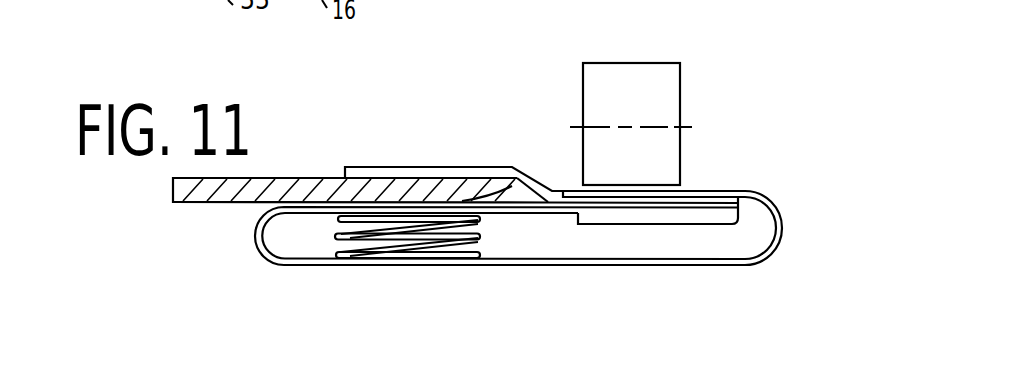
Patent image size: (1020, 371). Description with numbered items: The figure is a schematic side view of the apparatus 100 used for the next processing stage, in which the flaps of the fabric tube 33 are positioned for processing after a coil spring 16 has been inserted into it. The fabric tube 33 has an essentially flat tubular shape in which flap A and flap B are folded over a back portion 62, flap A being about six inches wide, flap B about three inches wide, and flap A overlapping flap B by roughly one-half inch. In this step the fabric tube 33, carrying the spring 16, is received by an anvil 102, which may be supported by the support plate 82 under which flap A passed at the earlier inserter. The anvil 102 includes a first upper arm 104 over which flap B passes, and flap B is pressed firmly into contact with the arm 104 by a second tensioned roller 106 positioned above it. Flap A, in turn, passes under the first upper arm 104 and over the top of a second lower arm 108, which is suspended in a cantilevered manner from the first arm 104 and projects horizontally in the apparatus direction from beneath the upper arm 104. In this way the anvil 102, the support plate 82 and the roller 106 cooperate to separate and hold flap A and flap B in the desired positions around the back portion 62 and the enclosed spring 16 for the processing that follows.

The coil spring 16 is at (340, 240).
The fabric tube 33 is at (262, 258).
The back portion 62 is at (512, 267).
The support plate 82 is at (297, 188).
The apparatus 100 is at (686, 46).
The anvil 102 is at (521, 166).
The first upper arm 104 is at (684, 197).
The second tensioned roller 106 is at (670, 92).
The second lower arm 108 is at (626, 210).
The flap A is at (499, 215).
The flap B is at (724, 196).